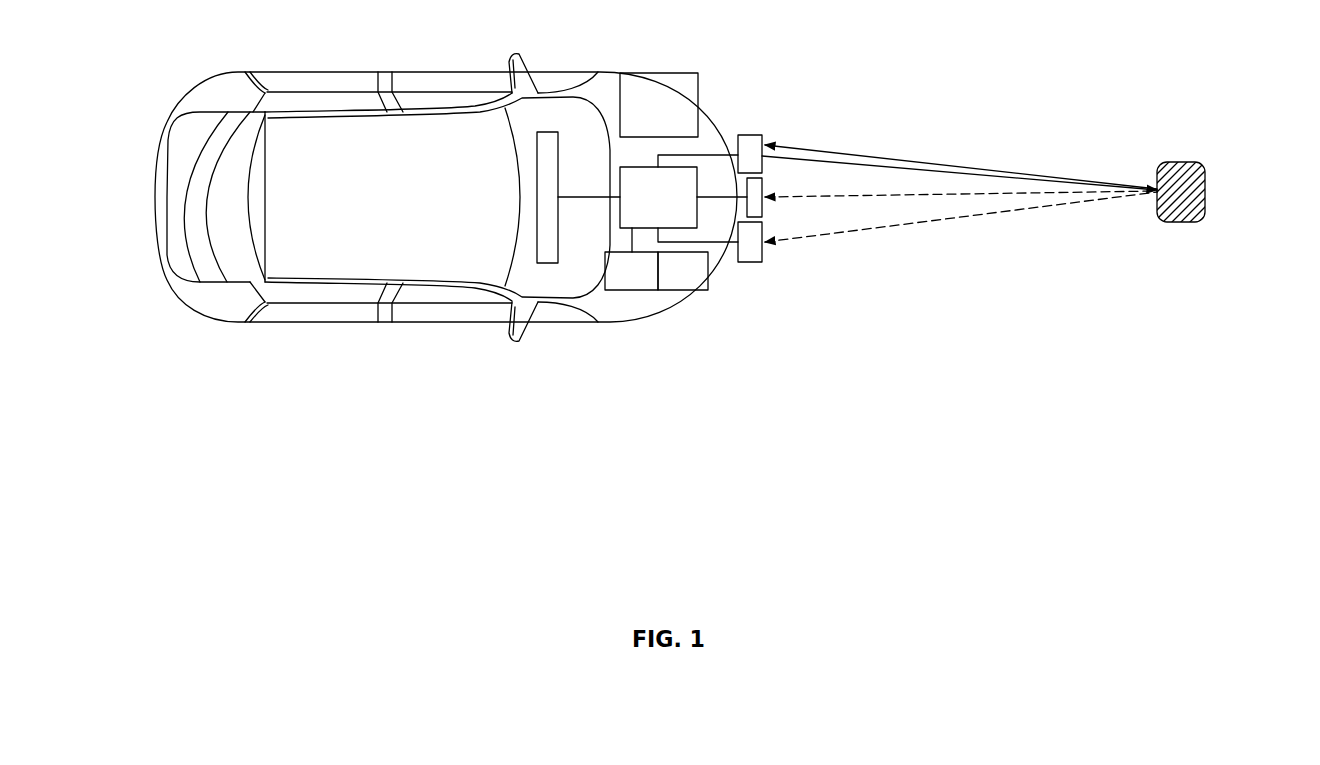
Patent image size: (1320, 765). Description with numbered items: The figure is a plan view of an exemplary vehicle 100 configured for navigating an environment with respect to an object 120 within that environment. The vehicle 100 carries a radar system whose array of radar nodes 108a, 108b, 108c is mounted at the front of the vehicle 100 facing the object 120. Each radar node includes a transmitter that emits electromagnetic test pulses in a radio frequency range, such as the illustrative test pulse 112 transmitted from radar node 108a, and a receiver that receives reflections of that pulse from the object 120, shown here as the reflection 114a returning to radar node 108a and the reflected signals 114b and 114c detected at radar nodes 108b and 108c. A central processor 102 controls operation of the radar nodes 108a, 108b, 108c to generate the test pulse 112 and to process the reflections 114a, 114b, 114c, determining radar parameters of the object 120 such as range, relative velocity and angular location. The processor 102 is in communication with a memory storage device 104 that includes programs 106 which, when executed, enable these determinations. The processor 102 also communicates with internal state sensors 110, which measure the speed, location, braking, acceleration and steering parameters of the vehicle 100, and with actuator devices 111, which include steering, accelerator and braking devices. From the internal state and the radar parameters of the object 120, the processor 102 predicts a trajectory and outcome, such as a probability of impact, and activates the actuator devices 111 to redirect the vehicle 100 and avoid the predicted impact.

The vehicle 100 is at (232, 72).
The central processor 102 is at (652, 198).
The memory storage device 104 is at (631, 259).
The programs 106 is at (683, 271).
The radar node 108a is at (751, 134).
The radar node 108b is at (765, 183).
The radar node 108c is at (753, 263).
The internal state sensors 110 is at (536, 222).
The actuator devices 111 is at (659, 105).
The test pulse 112 is at (1011, 178).
The reflection 114a is at (934, 161).
The reflected signal 114b is at (977, 196).
The reflected signal 114c is at (864, 231).
The object 120 is at (1187, 162).